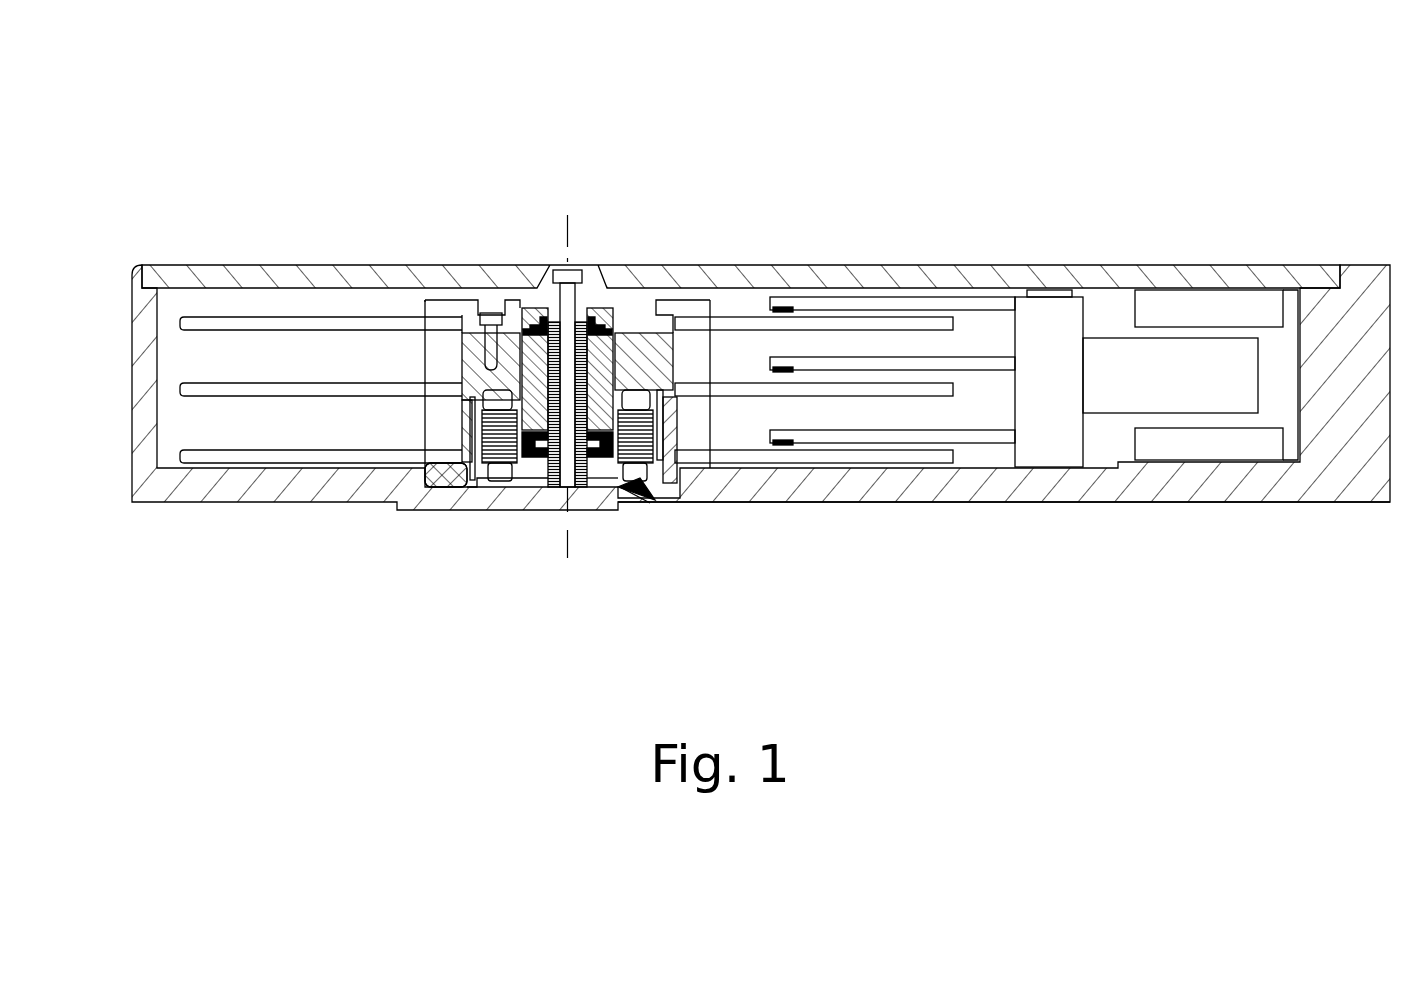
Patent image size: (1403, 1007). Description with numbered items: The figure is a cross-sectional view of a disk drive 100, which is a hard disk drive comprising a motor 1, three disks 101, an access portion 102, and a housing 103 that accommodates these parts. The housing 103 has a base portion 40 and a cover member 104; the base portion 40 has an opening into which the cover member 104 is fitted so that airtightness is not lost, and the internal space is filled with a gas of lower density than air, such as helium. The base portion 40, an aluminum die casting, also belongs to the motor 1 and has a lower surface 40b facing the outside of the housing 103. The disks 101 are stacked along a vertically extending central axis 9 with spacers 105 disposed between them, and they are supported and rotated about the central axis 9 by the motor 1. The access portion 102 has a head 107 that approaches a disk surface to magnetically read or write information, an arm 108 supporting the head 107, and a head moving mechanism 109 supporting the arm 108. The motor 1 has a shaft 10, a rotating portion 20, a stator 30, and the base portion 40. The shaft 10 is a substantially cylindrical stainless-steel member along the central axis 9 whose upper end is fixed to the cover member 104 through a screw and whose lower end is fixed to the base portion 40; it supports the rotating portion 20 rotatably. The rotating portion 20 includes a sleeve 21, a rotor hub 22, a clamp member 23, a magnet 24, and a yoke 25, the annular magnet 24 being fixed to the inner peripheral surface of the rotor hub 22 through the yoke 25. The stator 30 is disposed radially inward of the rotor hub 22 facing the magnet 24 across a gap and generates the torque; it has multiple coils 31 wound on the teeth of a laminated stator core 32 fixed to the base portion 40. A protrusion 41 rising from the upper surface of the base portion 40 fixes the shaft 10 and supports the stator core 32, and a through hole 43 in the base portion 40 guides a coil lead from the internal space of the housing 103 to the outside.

The disk drive 100 is at (1301, 176).
The housing 103 is at (717, 374).
The cover member 104 is at (160, 272).
The base portion 40 is at (142, 318).
The lower surface 40b is at (1070, 503).
The disks 101 is at (945, 458).
The access portion 102 is at (1034, 313).
The head 107 is at (781, 430).
The arm 108 is at (1000, 430).
The head moving mechanism 109 is at (1064, 339).
The shaft 10 is at (485, 386).
The central axis 9 is at (568, 243).
The motor 1 is at (722, 298).
The rotating portion 20 is at (405, 300).
The sleeve 21 is at (615, 312).
The rotor hub 22 is at (645, 330).
The clamp member 23 is at (472, 312).
The magnet 24 is at (455, 455).
The yoke 25 is at (447, 423).
The stator 30 is at (527, 472).
The coils 31 is at (500, 470).
The stator core 32 is at (507, 472).
The protrusion 41 is at (518, 483).
The through hole 43 is at (642, 505).
The spacers 105 is at (437, 360).